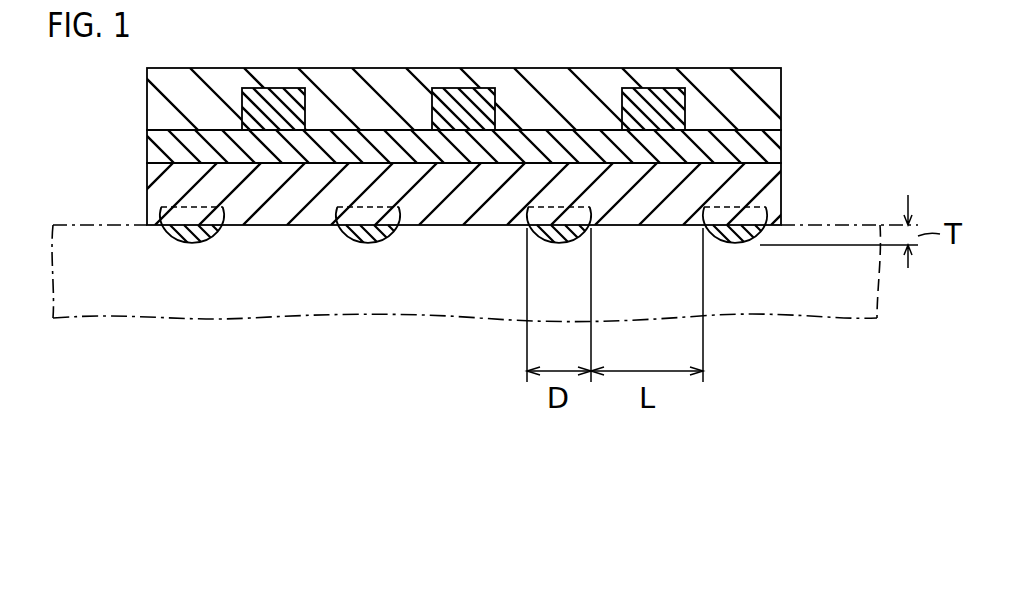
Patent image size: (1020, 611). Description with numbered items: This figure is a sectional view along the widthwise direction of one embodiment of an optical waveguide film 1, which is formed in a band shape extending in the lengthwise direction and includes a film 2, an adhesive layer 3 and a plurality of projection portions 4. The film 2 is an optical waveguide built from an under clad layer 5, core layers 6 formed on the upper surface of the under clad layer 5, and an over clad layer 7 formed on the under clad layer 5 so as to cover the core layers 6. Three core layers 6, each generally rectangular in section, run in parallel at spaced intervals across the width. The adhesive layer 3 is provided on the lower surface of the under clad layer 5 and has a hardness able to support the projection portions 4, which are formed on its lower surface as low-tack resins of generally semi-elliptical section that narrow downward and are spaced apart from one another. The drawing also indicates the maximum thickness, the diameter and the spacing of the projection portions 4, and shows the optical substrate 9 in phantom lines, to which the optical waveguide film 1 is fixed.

The optical waveguide film 1 is at (93, 100).
The film 2 is at (145, 68).
The adhesive layer 3 is at (147, 200).
The projection portions 4 is at (715, 270).
The under clad layer 5 is at (782, 140).
The core layer 6 is at (653, 87).
The over clad layer 7 is at (782, 91).
The optical substrate 9 is at (813, 320).